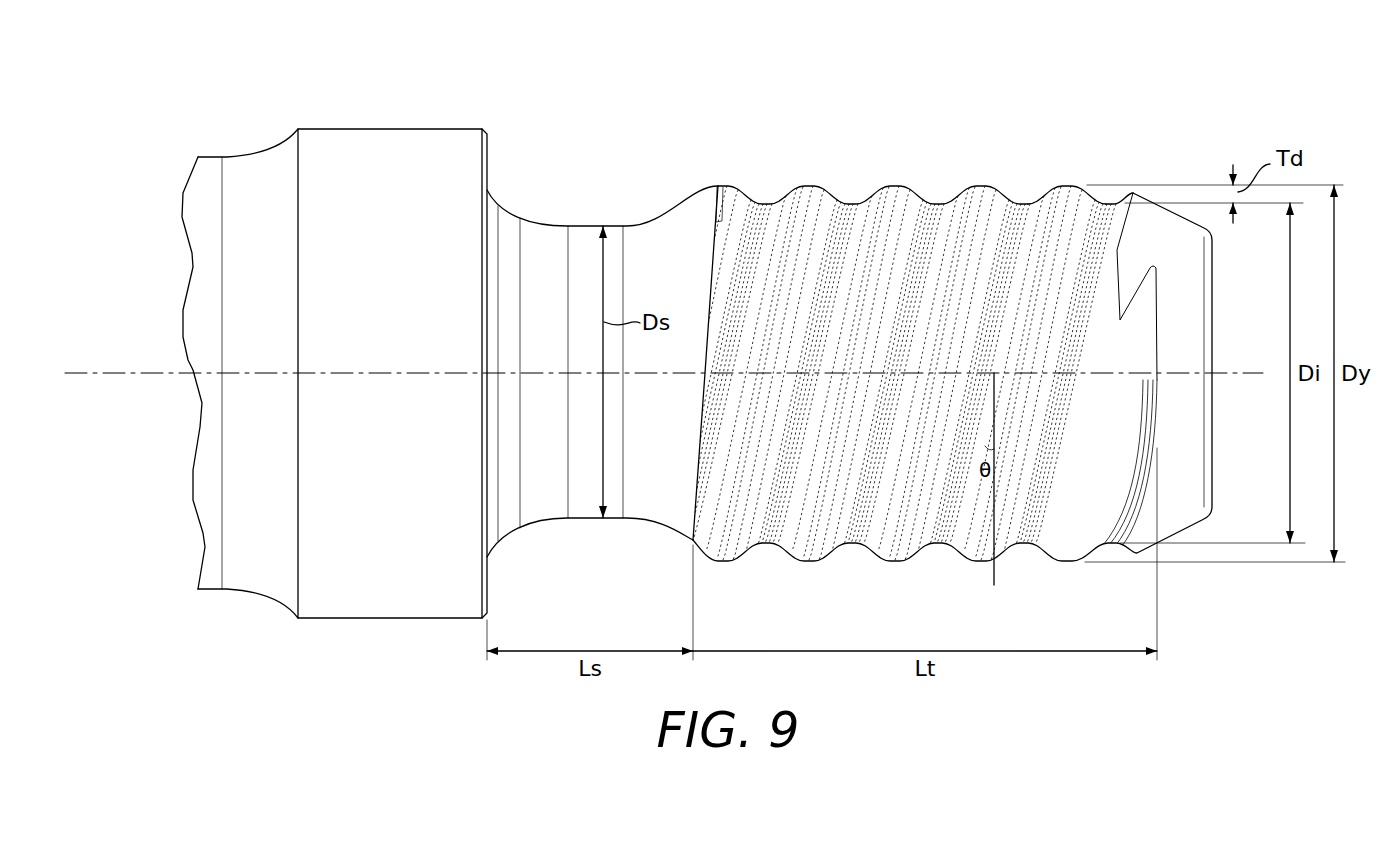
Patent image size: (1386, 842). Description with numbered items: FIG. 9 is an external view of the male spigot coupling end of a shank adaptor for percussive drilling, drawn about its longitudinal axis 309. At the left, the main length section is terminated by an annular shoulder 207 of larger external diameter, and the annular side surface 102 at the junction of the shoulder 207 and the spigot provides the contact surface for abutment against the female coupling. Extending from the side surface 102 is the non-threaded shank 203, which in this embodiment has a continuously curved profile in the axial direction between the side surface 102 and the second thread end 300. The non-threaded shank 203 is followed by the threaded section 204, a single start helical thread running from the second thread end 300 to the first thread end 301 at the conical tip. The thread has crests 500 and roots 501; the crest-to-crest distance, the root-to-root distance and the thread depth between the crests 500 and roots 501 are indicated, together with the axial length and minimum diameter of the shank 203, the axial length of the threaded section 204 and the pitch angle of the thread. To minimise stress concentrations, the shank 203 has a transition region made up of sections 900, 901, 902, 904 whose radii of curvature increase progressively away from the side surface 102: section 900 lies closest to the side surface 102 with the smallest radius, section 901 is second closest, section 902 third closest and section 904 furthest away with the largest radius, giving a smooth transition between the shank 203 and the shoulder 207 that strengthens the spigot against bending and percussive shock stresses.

The annular side surface 102 is at (488, 148).
The non-threaded shank 203 is at (602, 326).
The threaded section 204 is at (956, 316).
The annular shoulder 207 is at (393, 136).
The second thread end 300 is at (697, 478).
The first thread end 301 is at (1153, 267).
The longitudinal axis 309 is at (115, 375).
The crests 500 is at (1063, 185).
The roots 501 is at (1108, 203).
The transition region section 900 is at (489, 205).
The transition region section 901 is at (510, 215).
The transition region section 902 is at (543, 520).
The transition region section 904 is at (595, 520).